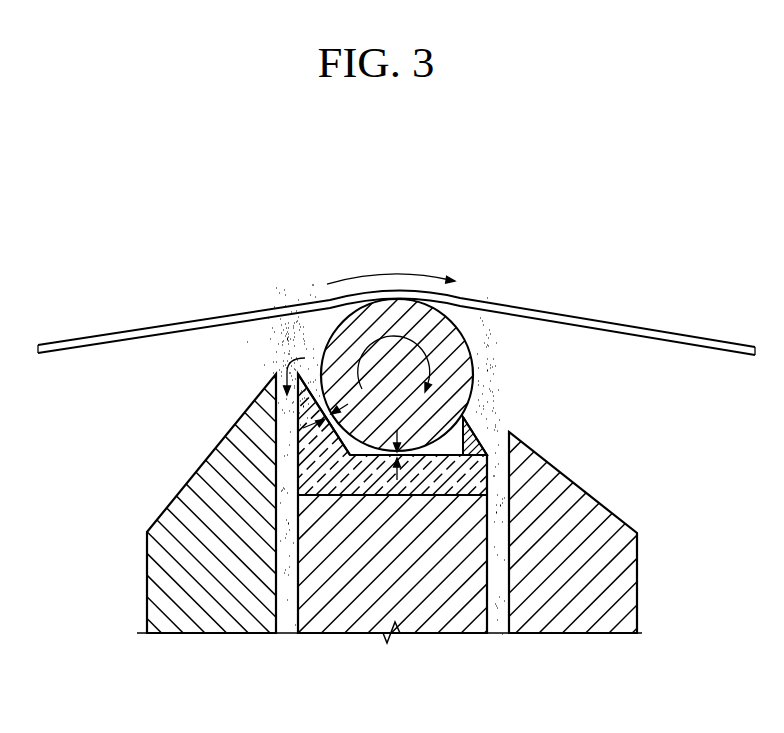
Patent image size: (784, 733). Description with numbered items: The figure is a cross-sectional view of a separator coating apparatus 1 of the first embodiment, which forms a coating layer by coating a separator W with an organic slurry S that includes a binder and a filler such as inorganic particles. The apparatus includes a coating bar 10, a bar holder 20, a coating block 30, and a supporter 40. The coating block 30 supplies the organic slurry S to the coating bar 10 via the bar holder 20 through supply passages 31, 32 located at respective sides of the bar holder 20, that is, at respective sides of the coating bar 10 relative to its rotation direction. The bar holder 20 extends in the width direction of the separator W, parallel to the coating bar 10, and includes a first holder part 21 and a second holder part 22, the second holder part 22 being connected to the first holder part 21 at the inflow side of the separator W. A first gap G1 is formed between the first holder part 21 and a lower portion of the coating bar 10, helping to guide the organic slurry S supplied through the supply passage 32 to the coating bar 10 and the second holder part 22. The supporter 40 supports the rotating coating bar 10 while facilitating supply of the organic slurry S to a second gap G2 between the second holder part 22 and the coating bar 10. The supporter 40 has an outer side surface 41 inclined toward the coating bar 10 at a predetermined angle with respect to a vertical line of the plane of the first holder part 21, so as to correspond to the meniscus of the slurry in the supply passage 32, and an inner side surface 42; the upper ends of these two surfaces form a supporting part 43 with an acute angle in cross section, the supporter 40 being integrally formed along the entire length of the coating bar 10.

The separator coating apparatus 1 is at (558, 254).
The coating bar 10 is at (343, 342).
The bar holder 20 is at (408, 504).
The first holder part 21 is at (396, 497).
The second holder part 22 is at (298, 412).
The coating block 30 is at (139, 583).
The supply passage 31 is at (286, 610).
The supply passage 32 is at (496, 610).
The supporter 40 is at (494, 445).
The outer side surface 41 is at (477, 423).
The inner side surface 42 is at (450, 416).
The supporting part 43 is at (466, 416).
The organic slurry S is at (296, 337).
The separator W is at (662, 336).
The first gap G1 is at (408, 447).
The second gap G2 is at (336, 418).